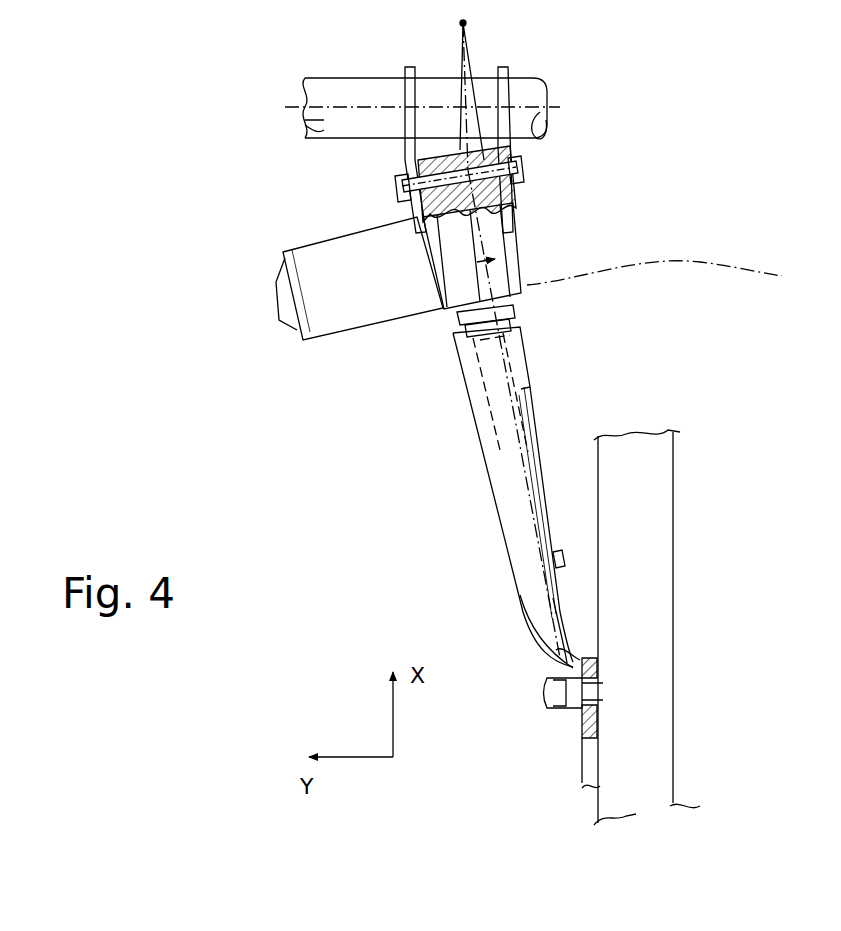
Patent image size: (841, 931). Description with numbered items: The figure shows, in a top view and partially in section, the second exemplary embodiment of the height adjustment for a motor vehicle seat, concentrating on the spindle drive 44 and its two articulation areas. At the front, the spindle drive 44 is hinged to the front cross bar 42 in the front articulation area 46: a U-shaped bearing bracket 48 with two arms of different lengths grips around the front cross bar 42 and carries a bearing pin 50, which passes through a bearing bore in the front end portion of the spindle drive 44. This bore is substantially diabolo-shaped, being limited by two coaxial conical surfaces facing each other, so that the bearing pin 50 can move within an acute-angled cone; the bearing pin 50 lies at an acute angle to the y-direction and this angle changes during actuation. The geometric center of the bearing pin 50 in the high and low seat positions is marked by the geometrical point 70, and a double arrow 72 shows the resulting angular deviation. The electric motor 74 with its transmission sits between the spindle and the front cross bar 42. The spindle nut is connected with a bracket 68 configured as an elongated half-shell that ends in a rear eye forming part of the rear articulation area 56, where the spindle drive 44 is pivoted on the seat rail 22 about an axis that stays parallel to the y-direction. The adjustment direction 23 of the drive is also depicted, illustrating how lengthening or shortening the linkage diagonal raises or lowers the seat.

The seat rail 22 is at (628, 447).
The adjustment direction 23 is at (674, 277).
The front cross bar 42 is at (325, 124).
The spindle drive 44 is at (386, 388).
The front articulation area 46 is at (386, 181).
The bearing bracket 48 is at (403, 67).
The bearing pin 50 is at (512, 182).
The rear articulation area 56 is at (544, 728).
The bracket 68 is at (515, 522).
The geometrical point 70 is at (463, 23).
The double arrow 72 is at (478, 262).
The electric motor 74 is at (308, 275).